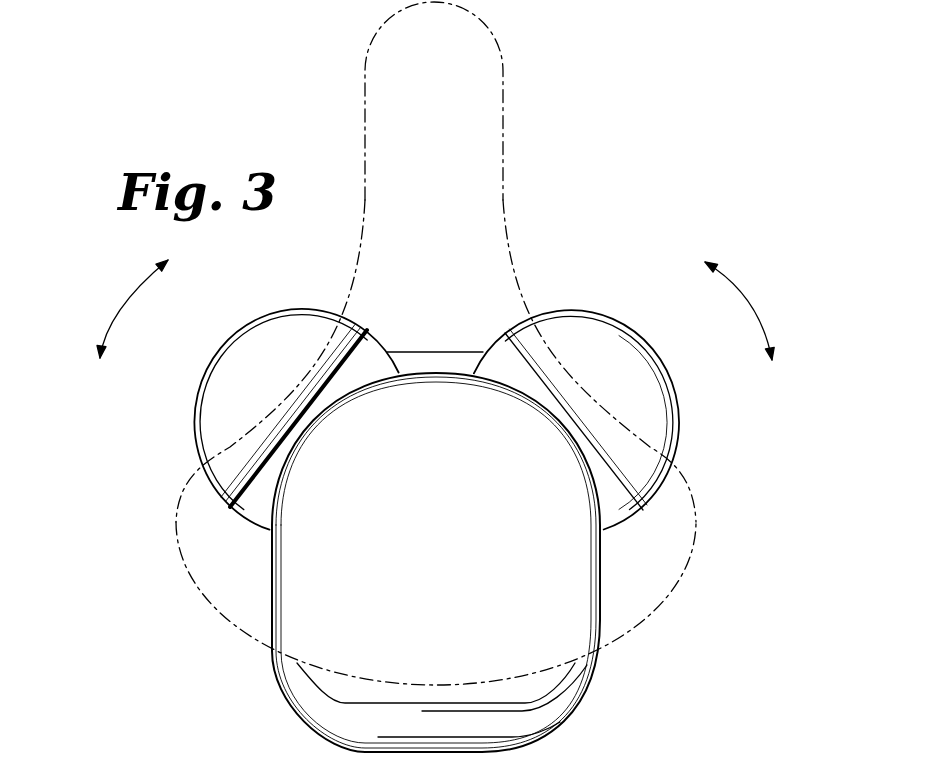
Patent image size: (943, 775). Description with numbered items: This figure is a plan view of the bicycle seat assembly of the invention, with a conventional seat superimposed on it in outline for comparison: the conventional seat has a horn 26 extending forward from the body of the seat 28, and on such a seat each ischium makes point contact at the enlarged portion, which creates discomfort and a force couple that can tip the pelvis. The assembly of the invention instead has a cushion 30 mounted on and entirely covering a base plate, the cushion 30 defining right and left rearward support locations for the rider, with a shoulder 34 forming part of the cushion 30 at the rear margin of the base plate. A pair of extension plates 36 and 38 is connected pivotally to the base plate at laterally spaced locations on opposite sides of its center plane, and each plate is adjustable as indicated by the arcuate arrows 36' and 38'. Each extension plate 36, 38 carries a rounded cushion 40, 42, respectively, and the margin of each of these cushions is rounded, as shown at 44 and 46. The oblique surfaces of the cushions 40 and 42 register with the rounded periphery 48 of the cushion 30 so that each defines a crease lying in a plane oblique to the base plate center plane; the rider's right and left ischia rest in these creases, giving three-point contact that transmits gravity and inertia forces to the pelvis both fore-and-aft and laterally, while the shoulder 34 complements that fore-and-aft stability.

The horn 26 is at (462, 135).
The body of the conventional seat 28 is at (630, 580).
The cushion 30 is at (525, 592).
The shoulder 34 is at (530, 722).
The extension plate 36 is at (617, 419).
The arcuate arrow 36' is at (761, 304).
The extension plate 38 is at (249, 440).
The arcuate arrow 38' is at (102, 309).
The rounded cushion 40 is at (592, 352).
The rounded cushion 42 is at (283, 345).
The rounded margin 44 is at (563, 312).
The rounded margin 46 is at (213, 380).
The rounded periphery 48 is at (280, 606).